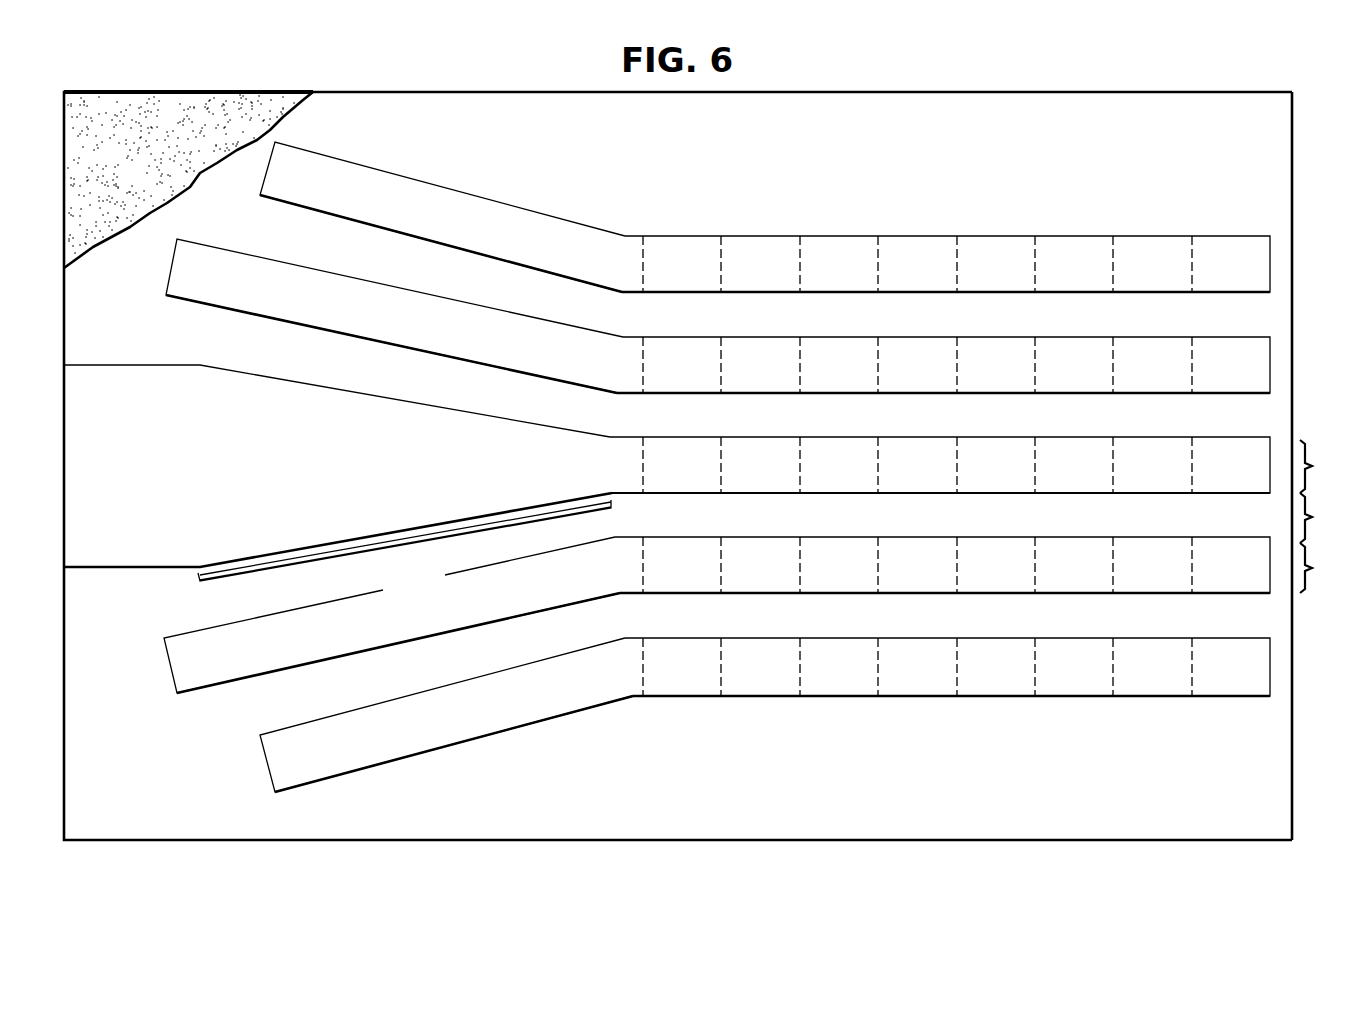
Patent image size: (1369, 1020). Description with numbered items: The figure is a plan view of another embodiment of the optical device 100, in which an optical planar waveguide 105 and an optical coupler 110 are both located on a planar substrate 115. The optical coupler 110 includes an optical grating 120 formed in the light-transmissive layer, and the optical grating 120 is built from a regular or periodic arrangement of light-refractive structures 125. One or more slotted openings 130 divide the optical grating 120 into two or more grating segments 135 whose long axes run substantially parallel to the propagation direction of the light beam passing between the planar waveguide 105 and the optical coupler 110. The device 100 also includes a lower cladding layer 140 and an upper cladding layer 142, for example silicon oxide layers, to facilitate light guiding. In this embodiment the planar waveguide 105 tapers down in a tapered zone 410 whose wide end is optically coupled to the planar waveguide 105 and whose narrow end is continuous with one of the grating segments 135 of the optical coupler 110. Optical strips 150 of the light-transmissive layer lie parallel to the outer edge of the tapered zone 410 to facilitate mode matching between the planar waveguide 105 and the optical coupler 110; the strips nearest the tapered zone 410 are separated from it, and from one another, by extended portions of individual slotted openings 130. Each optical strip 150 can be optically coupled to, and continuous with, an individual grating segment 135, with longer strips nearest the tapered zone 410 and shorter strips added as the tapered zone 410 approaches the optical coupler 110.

The optical device 100 is at (1163, 63).
The optical planar waveguide 105 is at (105, 342).
The optical coupler 110 is at (940, 410).
The planar substrate 115 is at (1292, 760).
The optical grating 120 is at (1077, 229).
The light-refractive structures 125 is at (765, 246).
The slotted openings 130 is at (1329, 518).
The grating segments 135 is at (1329, 516).
The lower cladding layer 140 is at (375, 100).
The upper cladding layer 142 is at (140, 100).
The optical strips 150 is at (452, 189).
The tapered zone 410 is at (412, 539).